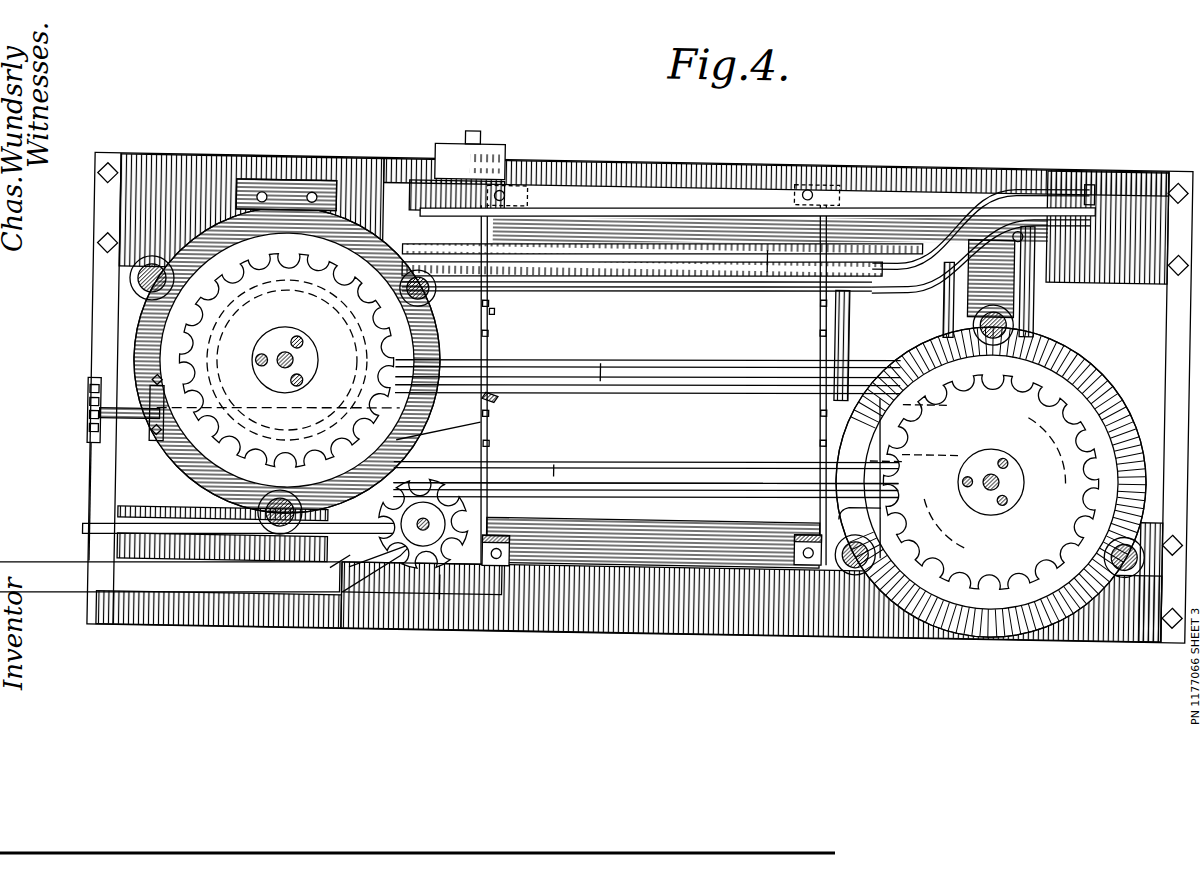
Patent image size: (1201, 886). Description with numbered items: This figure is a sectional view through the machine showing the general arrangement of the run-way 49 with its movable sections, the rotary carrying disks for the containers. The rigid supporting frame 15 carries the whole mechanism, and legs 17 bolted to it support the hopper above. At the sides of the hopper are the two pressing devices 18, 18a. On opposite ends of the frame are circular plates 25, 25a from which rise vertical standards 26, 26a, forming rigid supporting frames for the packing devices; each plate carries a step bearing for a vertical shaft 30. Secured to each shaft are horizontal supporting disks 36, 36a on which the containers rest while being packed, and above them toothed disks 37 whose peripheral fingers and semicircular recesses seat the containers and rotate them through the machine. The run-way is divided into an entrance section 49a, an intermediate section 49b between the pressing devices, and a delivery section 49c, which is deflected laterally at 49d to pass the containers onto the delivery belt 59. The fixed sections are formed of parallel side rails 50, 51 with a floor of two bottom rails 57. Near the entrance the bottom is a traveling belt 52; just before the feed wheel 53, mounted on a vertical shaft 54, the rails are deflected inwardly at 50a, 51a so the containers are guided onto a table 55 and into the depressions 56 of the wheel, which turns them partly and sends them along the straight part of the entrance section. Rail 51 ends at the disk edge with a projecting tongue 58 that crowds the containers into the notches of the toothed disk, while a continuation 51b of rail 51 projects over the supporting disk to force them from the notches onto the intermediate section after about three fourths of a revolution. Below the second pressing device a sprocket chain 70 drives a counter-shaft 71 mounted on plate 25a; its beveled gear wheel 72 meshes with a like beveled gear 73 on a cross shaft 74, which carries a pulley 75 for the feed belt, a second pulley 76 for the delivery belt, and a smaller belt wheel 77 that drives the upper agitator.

The supporting frame 15 is at (621, 410).
The legs 17 is at (508, 203).
The pressing device 18 is at (1104, 406).
The pressing device 18a is at (249, 323).
The circular plate 25 is at (1136, 398).
The circular plate 25a is at (143, 360).
The vertical standard 26 is at (1014, 319).
The vertical standard 26a is at (264, 517).
The vertical shaft 30 is at (292, 368).
The supporting disk 36 is at (979, 590).
The supporting disk 36a is at (178, 368).
The toothed disk 37 is at (231, 336).
The run-way 49 is at (635, 366).
The entrance section 49a is at (620, 485).
The intermediate section 49b is at (653, 379).
The delivery section 49c is at (624, 273).
The lateral deflection 49d is at (909, 234).
The side rail 50 is at (115, 537).
The deflected rail portion 50a is at (365, 565).
The side rail 51 is at (204, 608).
The deflected rail portion 51a is at (384, 597).
The rail continuation 51b is at (941, 428).
The traveling belt 52 is at (170, 577).
The feed wheel 53 is at (448, 581).
The vertical shaft 54 is at (424, 538).
The table 55 is at (350, 555).
The depressions 56 is at (428, 574).
The bottom rails 57 is at (765, 270).
The projecting tongue 58 is at (861, 572).
The delivery belt 59 is at (830, 197).
The sprocket chain 70 is at (88, 450).
The counter-shaft 71 is at (142, 432).
The beveled gear wheel 72 is at (486, 428).
The beveled gear 73 is at (496, 395).
The cross shaft 74 is at (493, 314).
The pulley 75 is at (517, 600).
The pulley 76 is at (416, 188).
The belt wheel 77 is at (470, 154).